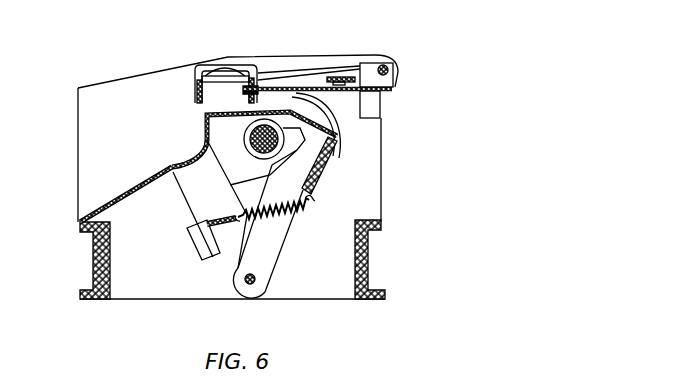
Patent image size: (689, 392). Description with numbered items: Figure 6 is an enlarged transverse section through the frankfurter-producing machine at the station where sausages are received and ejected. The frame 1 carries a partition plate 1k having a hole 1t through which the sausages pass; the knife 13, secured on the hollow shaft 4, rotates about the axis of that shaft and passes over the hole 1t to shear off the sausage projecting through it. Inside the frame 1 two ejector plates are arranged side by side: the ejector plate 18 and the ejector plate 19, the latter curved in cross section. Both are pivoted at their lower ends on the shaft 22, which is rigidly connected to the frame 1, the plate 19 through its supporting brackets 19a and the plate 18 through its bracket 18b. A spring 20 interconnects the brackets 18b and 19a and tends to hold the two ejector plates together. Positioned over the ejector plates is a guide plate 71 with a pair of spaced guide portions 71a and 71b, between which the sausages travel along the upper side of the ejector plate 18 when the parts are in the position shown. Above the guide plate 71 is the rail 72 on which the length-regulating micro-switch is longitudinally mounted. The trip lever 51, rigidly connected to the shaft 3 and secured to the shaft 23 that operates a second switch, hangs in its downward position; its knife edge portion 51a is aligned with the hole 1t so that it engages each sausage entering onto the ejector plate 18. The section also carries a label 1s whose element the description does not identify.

The frame 1 is at (363, 252).
The partition plate 1k is at (88, 127).
The inclined wall 1s is at (142, 187).
The hole 1t is at (203, 67).
The secondary shaft 3 is at (243, 149).
The hollow shaft 4 is at (337, 142).
The knife 13 is at (323, 77).
The ejector plate 18 is at (294, 95).
The bracket 18b is at (268, 245).
The ejector plate 19 is at (200, 144).
The supporting brackets 19a is at (233, 247).
The spring 20 is at (313, 200).
The shaft 22 is at (253, 280).
The shaft 23 is at (395, 63).
The trip lever 51 is at (290, 70).
The knife edge portion 51a is at (201, 110).
The guide plate 71 is at (265, 78).
The guide portion 71a is at (195, 82).
The guide portion 71b is at (251, 67).
The rail 72 is at (338, 67).